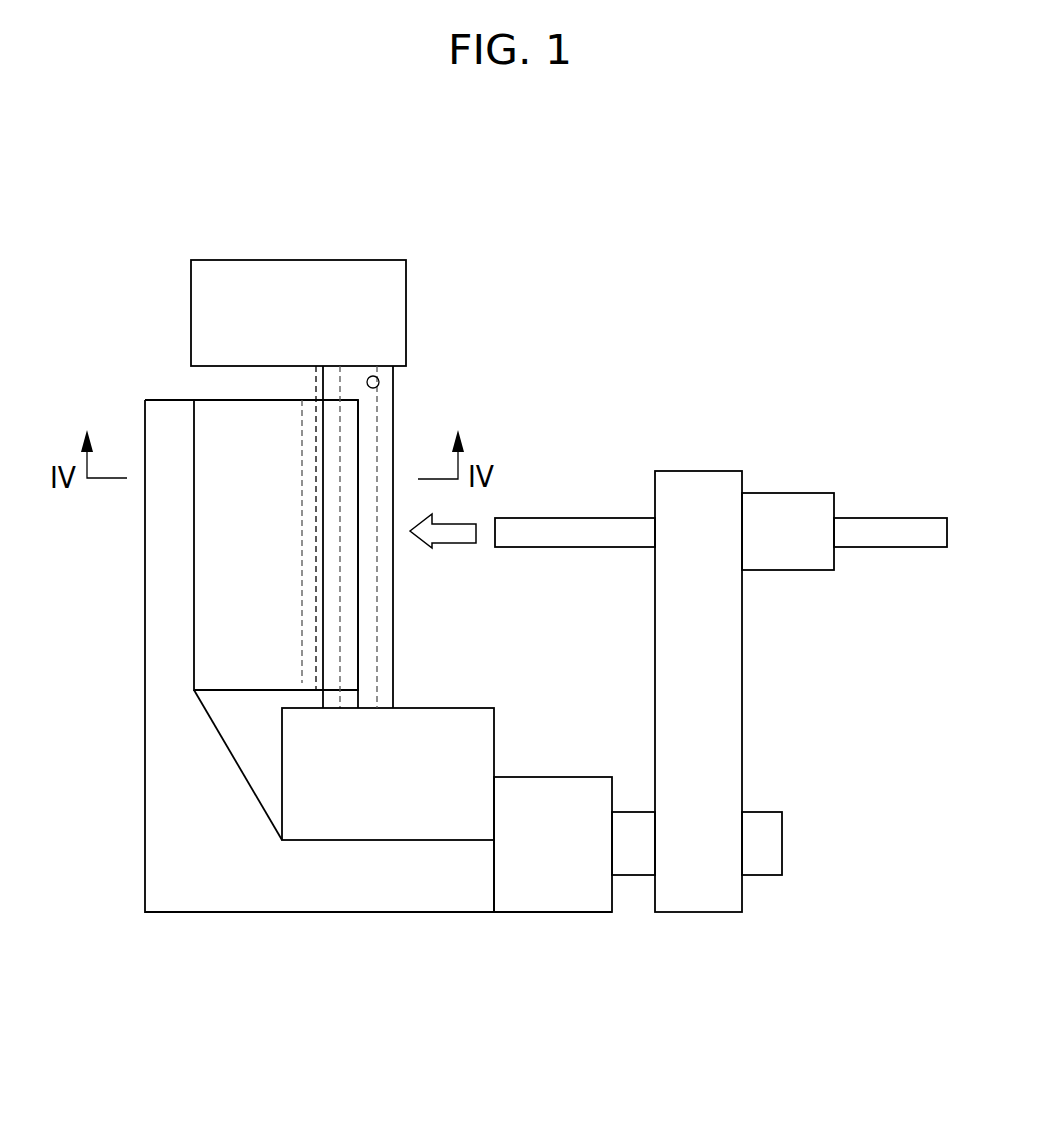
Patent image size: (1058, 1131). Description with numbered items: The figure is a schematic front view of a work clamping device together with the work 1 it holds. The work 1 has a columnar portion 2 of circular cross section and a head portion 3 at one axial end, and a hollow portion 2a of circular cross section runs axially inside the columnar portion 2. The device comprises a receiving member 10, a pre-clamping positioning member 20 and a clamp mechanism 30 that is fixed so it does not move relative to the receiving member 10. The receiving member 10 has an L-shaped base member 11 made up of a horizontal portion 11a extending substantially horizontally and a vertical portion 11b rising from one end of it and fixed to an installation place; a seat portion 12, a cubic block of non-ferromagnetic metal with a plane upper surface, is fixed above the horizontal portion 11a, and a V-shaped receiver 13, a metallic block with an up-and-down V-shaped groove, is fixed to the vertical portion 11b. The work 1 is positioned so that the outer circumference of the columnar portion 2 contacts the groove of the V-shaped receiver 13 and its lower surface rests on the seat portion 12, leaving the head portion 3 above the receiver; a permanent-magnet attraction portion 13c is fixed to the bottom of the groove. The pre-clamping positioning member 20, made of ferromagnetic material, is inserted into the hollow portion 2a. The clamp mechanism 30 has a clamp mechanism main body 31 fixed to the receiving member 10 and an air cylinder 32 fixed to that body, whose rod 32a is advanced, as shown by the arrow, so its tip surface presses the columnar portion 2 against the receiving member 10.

The work 1 is at (207, 247).
The columnar portion 2 is at (414, 535).
The hollow portion 2a is at (395, 377).
The head portion 3 is at (406, 312).
The receiving member 10 is at (322, 660).
The base 11 is at (157, 815).
The horizontal portion 11a is at (345, 913).
The vertical portion 11b is at (145, 630).
The seat portion 12 is at (494, 741).
The V-shaped receiver 13 is at (160, 400).
The attraction portion 13c is at (316, 400).
The pre-clamping positioning member 20 is at (362, 692).
The clamp mechanism 30 is at (721, 653).
The clamp mechanism main body 31 is at (742, 755).
The air cylinder 32 is at (778, 493).
The rod 32a is at (588, 518).